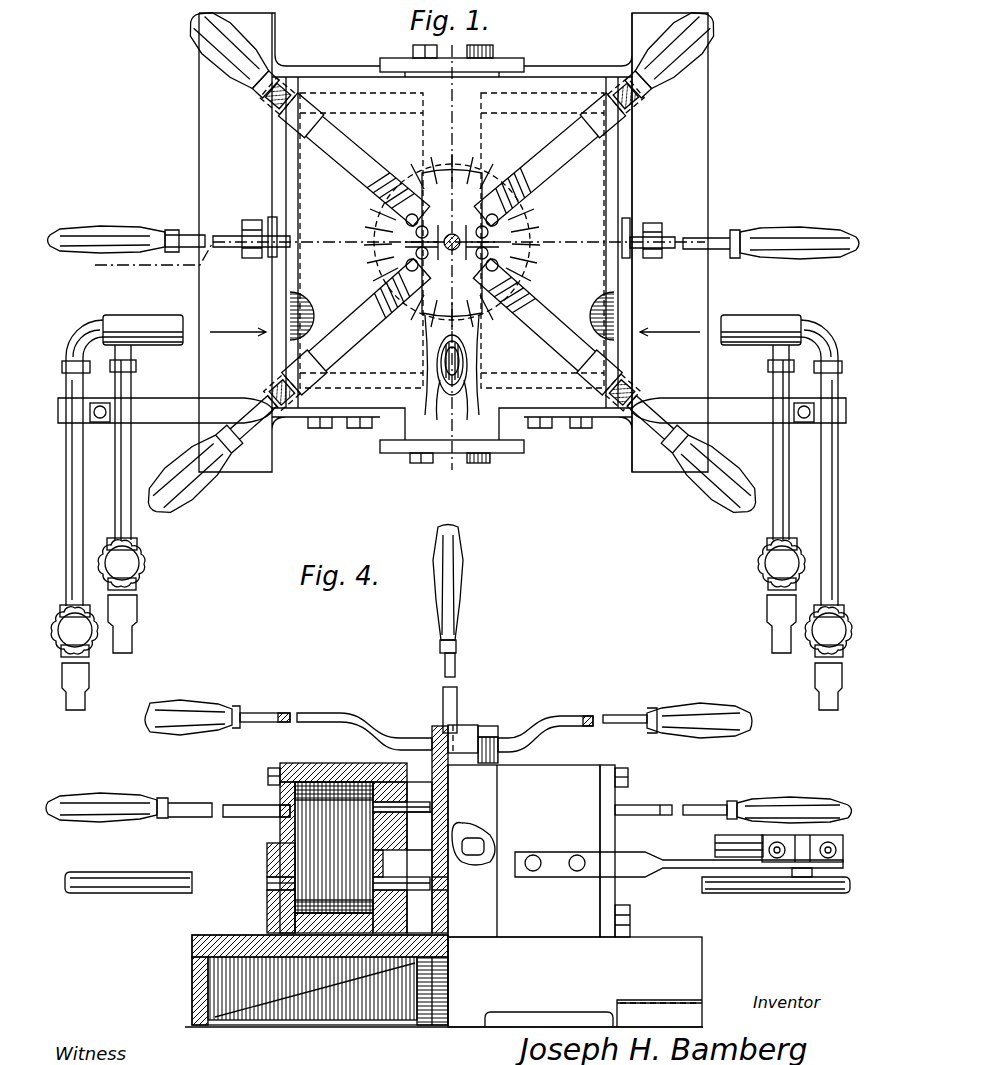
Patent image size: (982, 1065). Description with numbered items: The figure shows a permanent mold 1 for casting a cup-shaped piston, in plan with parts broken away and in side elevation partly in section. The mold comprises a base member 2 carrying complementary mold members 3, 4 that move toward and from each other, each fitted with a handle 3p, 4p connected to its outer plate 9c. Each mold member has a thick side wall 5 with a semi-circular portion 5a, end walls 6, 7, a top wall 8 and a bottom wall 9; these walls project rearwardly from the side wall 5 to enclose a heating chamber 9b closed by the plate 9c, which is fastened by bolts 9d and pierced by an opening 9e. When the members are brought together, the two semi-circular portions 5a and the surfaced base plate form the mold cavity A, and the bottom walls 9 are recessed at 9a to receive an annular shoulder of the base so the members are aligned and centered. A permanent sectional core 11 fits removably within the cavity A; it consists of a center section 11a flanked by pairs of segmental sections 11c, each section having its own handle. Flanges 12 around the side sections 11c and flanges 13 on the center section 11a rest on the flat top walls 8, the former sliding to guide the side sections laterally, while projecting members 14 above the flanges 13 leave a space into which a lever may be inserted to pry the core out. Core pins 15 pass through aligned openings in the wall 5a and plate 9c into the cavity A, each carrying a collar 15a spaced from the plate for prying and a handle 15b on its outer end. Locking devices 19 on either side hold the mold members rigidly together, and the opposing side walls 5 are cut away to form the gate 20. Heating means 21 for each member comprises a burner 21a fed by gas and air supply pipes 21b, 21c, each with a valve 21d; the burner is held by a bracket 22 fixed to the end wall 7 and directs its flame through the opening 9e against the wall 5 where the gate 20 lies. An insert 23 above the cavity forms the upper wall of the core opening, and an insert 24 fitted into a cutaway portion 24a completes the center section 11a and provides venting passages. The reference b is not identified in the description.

In FIG. 1, the permanent mold 1 is at (439, 242).
In FIG. 4, the permanent mold 1 is at (524, 851).
In FIG. 1, the base member 2 is at (712, 143).
In FIG. 4, the base member 2 is at (178, 990).
In FIG. 1, the complementary mold member 3 is at (320, 72).
In FIG. 4, the complementary mold member 3 is at (308, 765).
In FIG. 1, the handle 3p is at (110, 228).
In FIG. 4, the handle 3p is at (128, 800).
In FIG. 1, the complementary mold member 4 is at (575, 55).
In FIG. 4, the complementary mold member 4 is at (610, 819).
In FIG. 1, the handle 4p is at (650, 260).
In FIG. 4, the handle 4p is at (705, 808).
In FIG. 1, the side wall 5 is at (428, 126).
In FIG. 1, the semi-circular portion 5a is at (380, 228).
In FIG. 4, the semi-circular portion 5a is at (382, 852).
In FIG. 1, the end wall 6 is at (370, 93).
In FIG. 1, the end wall 7 is at (347, 412).
In FIG. 4, the top wall 8 is at (328, 765).
In FIG. 4, the bottom wall 9 is at (268, 920).
In FIG. 4, the recess 9a is at (280, 912).
In FIG. 1, the heating chamber 9b is at (292, 296).
In FIG. 4, the heating chamber 9b is at (310, 828).
In FIG. 1, the plate 9c is at (288, 168).
In FIG. 4, the plate 9c is at (616, 796).
In FIG. 1, the bolts 9d is at (270, 92).
In FIG. 4, the bolts 9d is at (628, 778).
In FIG. 1, the opening 9e is at (288, 330).
In FIG. 1, the permanent sectional core 11 is at (452, 284).
In FIG. 1, the center section 11a is at (500, 178).
In FIG. 4, the center section 11a is at (458, 665).
In FIG. 1, the segmental core section 11c is at (352, 190).
In FIG. 4, the segmental core section 11c is at (325, 713).
In FIG. 4, the supporting devices 12 is at (502, 752).
In FIG. 4, the flanges 13 is at (482, 765).
In FIG. 1, the projecting members 14 is at (478, 175).
In FIG. 4, the projecting members 14 is at (472, 735).
In FIG. 1, the core pins 15 is at (640, 220).
In FIG. 4, the core pins 15 is at (137, 880).
In FIG. 1, the collar 15a is at (250, 218).
In FIG. 1, the handle 15b is at (790, 230).
In FIG. 1, the locking devices 19 is at (423, 477).
In FIG. 4, the locking devices 19 is at (488, 825).
In FIG. 1, the gate 20 is at (437, 364).
In FIG. 1, the heating means 21 is at (140, 320).
In FIG. 1, the burner 21a is at (170, 322).
In FIG. 4, the burner 21a is at (725, 845).
In FIG. 1, the gas supply pipe 21b is at (130, 470).
In FIG. 4, the gas supply pipe 21b is at (776, 845).
In FIG. 1, the air supply pipe 21c is at (82, 495).
In FIG. 4, the air supply pipe 21c is at (828, 845).
In FIG. 1, the valve 21d is at (141, 562).
In FIG. 1, the bracket 22 is at (165, 400).
In FIG. 4, the bracket 22 is at (668, 855).
In FIG. 4, the insert 23 is at (405, 790).
In FIG. 4, the insert 24 is at (448, 890).
In FIG. 4, the recess or cutaway portion 24a is at (488, 838).
In FIG. 4, the mold cavity A is at (448, 955).
In FIG. 4, the part b is at (420, 868).